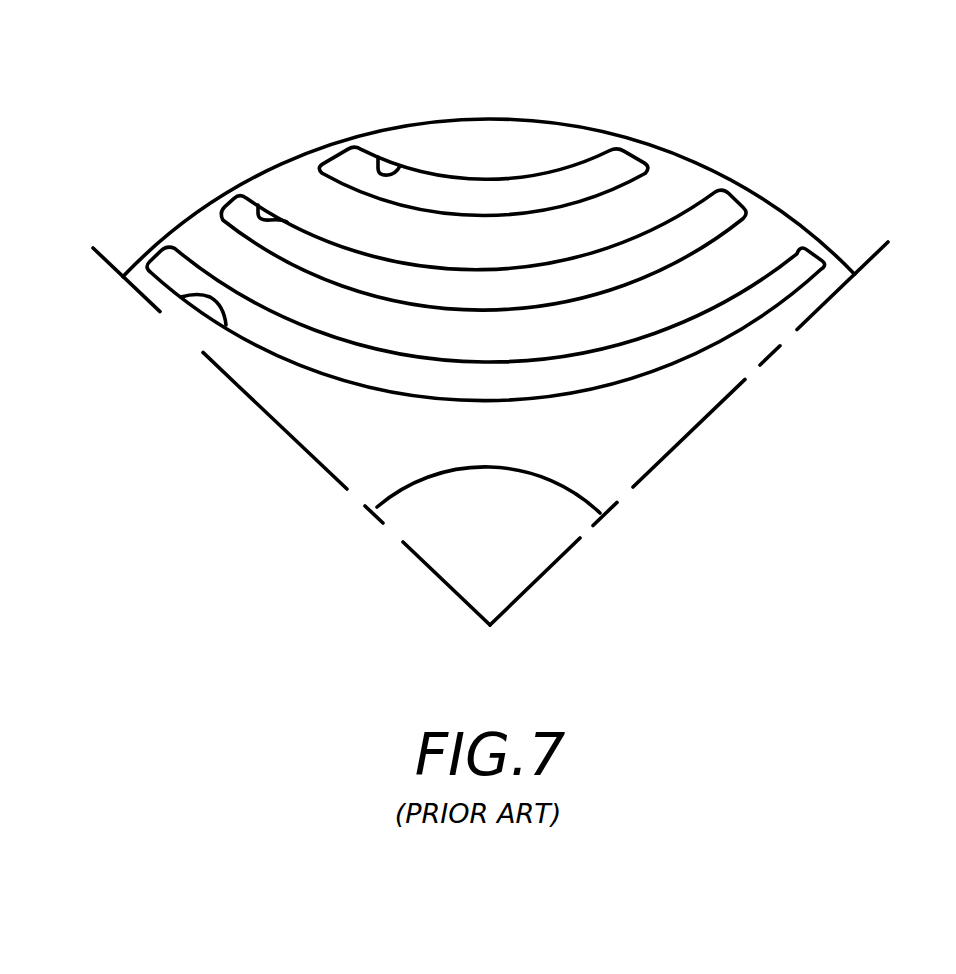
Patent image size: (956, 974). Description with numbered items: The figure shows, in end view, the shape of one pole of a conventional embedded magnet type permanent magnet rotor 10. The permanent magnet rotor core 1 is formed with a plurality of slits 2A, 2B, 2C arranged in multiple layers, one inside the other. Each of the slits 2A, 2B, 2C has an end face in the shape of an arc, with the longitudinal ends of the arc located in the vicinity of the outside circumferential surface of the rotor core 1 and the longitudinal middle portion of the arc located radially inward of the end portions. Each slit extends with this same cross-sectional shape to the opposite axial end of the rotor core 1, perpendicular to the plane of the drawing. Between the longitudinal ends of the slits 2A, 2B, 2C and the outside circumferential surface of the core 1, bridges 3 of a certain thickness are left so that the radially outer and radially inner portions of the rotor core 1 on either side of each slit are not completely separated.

The permanent magnet rotor core 1 is at (533, 142).
The permanent magnet rotor 10 is at (733, 101).
The slit 2A is at (378, 163).
The slit 2B is at (258, 205).
The slit 2C is at (200, 295).
The bridge 3 is at (155, 248).